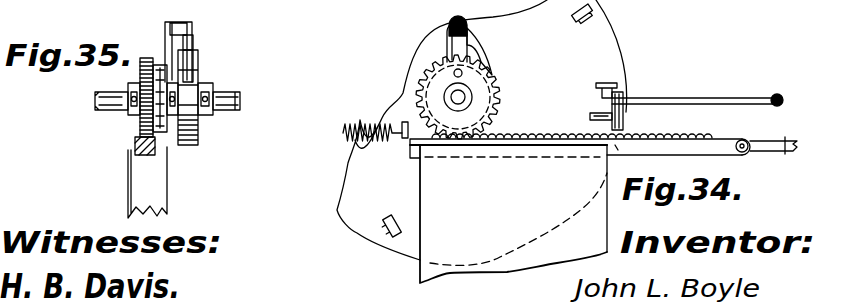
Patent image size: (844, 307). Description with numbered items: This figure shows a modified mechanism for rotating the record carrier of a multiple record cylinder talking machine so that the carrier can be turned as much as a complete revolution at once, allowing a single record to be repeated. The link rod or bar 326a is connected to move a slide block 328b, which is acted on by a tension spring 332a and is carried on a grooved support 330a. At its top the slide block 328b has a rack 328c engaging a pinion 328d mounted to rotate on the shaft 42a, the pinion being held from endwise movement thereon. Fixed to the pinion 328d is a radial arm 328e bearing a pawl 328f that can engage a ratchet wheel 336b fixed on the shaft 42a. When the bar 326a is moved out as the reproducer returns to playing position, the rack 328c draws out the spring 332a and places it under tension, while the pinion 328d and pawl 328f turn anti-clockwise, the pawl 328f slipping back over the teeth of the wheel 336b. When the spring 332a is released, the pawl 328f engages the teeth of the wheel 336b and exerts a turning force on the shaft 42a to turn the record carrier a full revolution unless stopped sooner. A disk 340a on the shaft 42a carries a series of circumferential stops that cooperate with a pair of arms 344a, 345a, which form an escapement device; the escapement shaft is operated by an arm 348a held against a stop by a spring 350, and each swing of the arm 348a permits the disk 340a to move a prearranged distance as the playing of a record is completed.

In FIG. 35, the shaft 42a is at (225, 92).
In FIG. 34, the slide block 328b is at (712, 143).
In FIG. 35, the rack 328c is at (135, 147).
In FIG. 34, the rack 328c is at (546, 114).
In FIG. 35, the pinion 328d is at (140, 125).
In FIG. 34, the pinion 328d is at (482, 85).
In FIG. 35, the radial arm 328e is at (170, 36).
In FIG. 34, the radial arm 328e is at (449, 44).
In FIG. 35, the pawl 328f is at (192, 46).
In FIG. 34, the pawl 328f is at (480, 50).
In FIG. 34, the link rod or bar 326a is at (738, 155).
In FIG. 35, the support 330a is at (145, 182).
In FIG. 34, the support 330a is at (440, 180).
In FIG. 34, the tension spring 332a is at (355, 130).
In FIG. 35, the ratchet wheel 336b is at (198, 136).
In FIG. 34, the disk 340a is at (598, 53).
In FIG. 34, the arm 344a is at (617, 90).
In FIG. 34, the arm 345a is at (624, 116).
In FIG. 34, the arm 348a is at (707, 87).
In FIG. 34, the spring 350 is at (779, 96).